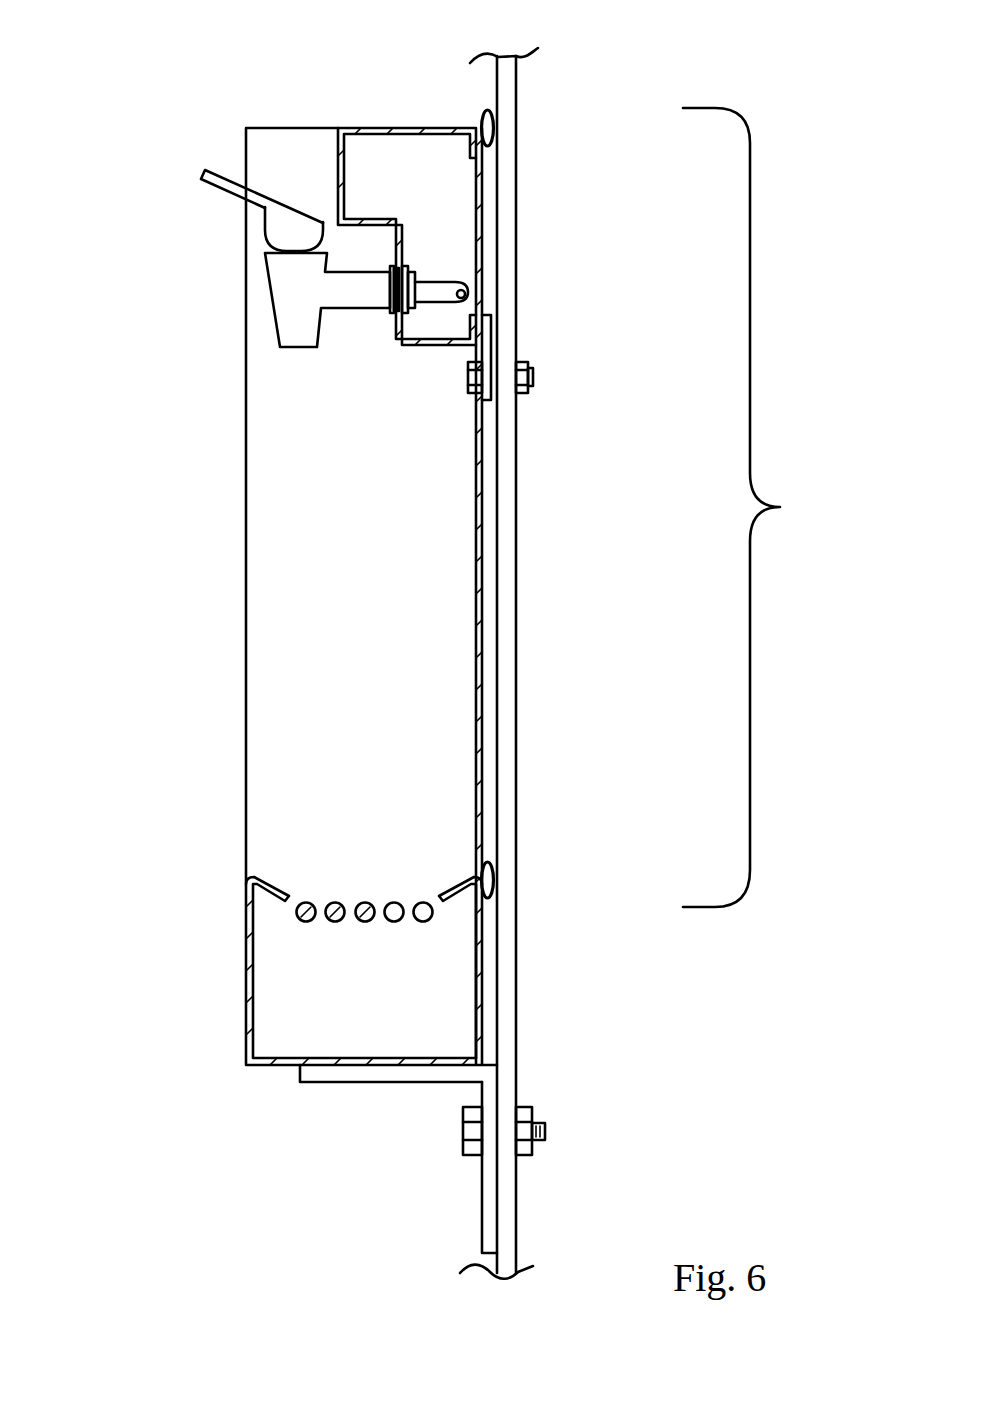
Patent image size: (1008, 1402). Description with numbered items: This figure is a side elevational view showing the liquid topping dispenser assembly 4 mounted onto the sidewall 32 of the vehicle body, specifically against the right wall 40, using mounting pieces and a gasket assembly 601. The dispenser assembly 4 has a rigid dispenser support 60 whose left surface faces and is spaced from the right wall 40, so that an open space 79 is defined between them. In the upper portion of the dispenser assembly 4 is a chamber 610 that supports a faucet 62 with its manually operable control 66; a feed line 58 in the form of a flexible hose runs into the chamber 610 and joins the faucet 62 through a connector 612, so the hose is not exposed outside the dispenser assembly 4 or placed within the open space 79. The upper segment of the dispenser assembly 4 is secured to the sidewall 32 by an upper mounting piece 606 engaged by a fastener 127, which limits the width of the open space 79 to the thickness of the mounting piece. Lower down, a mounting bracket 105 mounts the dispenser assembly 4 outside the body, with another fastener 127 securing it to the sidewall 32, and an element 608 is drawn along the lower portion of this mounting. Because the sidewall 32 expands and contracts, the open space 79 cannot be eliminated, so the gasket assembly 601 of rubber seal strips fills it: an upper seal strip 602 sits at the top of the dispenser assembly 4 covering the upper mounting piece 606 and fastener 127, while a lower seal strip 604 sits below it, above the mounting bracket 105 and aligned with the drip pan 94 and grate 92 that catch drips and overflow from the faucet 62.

The dispenser assembly 4 is at (223, 244).
The control 66 is at (217, 185).
The faucet 62 is at (277, 312).
The dispenser support 60 is at (246, 772).
The chamber 610 is at (477, 185).
The connector 612 is at (418, 273).
The feed line 58 is at (466, 288).
The upper seal strip 602 is at (497, 123).
The lower seal strip 604 is at (497, 880).
The upper mounting piece 606 is at (490, 335).
The fastener 127 is at (532, 388).
The open space 79 is at (497, 505).
The sidewall 32 is at (577, 663).
The right wall 40 is at (577, 663).
The drip pan 94 is at (263, 885).
The grate 92 is at (300, 921).
The mounting bracket 105 is at (300, 1080).
The lower mounting bracket 608 is at (482, 1188).
The gasket assembly 601 is at (780, 507).